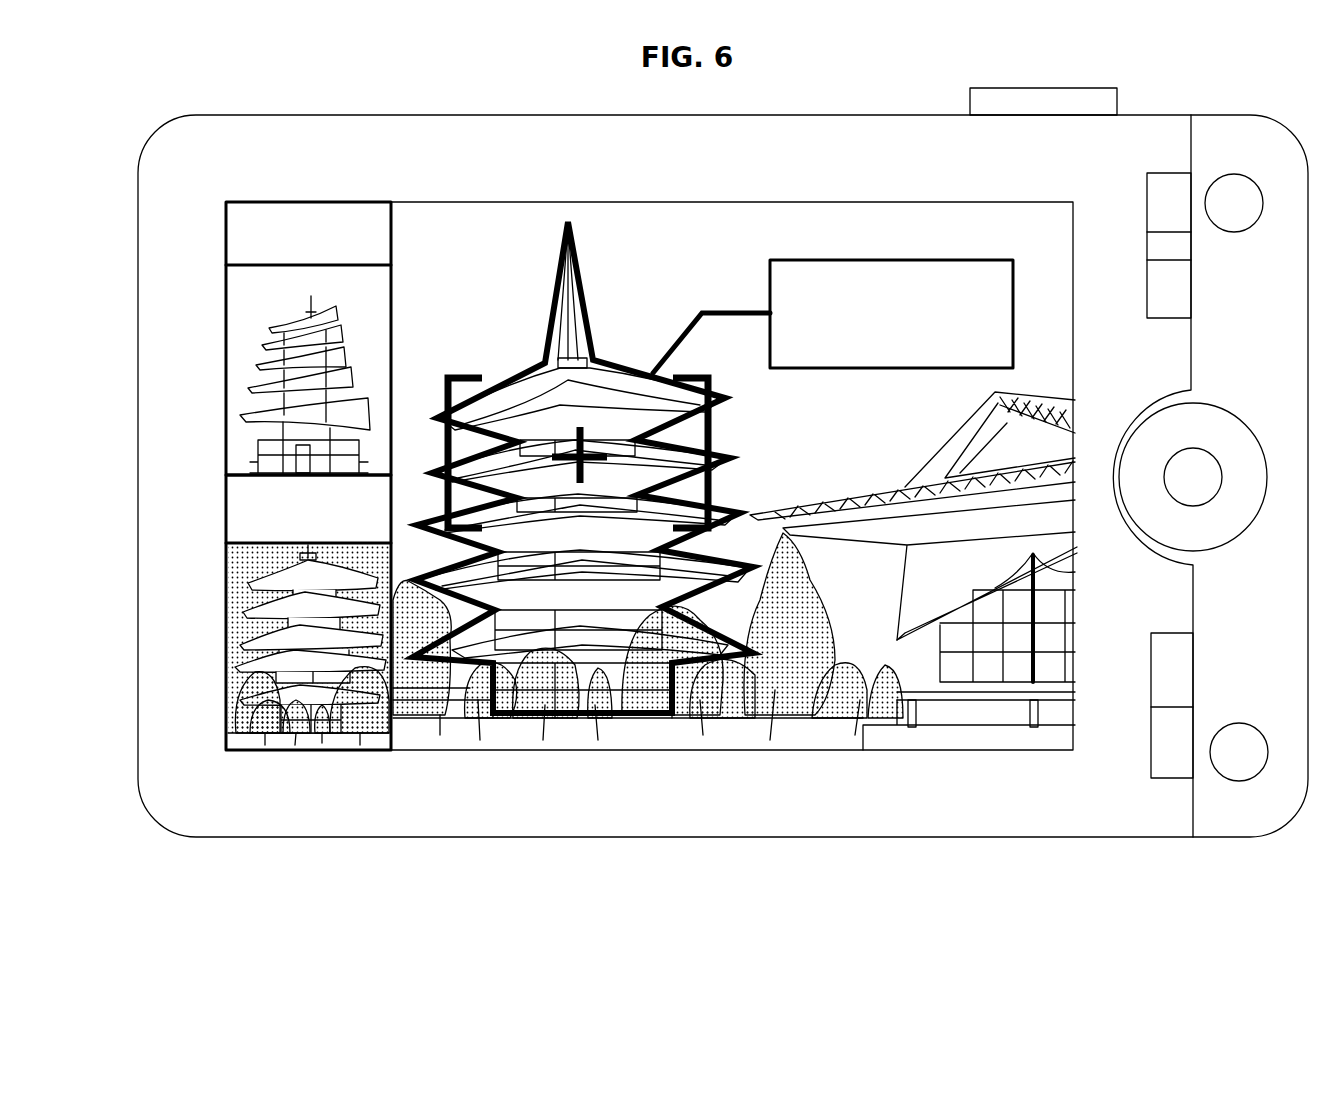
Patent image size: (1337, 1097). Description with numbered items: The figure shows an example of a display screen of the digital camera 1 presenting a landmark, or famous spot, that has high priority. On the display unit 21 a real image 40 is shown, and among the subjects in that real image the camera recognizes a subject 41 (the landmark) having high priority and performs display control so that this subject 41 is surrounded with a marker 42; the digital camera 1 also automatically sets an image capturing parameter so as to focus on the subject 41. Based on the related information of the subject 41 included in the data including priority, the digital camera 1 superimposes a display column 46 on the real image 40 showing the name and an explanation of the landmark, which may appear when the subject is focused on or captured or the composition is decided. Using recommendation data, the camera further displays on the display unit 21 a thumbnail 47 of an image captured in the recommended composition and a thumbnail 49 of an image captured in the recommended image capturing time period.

The digital camera 1 is at (722, 116).
The display unit 21 is at (807, 750).
The real image 40 is at (735, 388).
The subject 41 is at (633, 387).
The marker 42 is at (543, 330).
The display column 46 is at (880, 260).
The thumbnail 47 is at (226, 334).
The thumbnail 49 is at (226, 608).